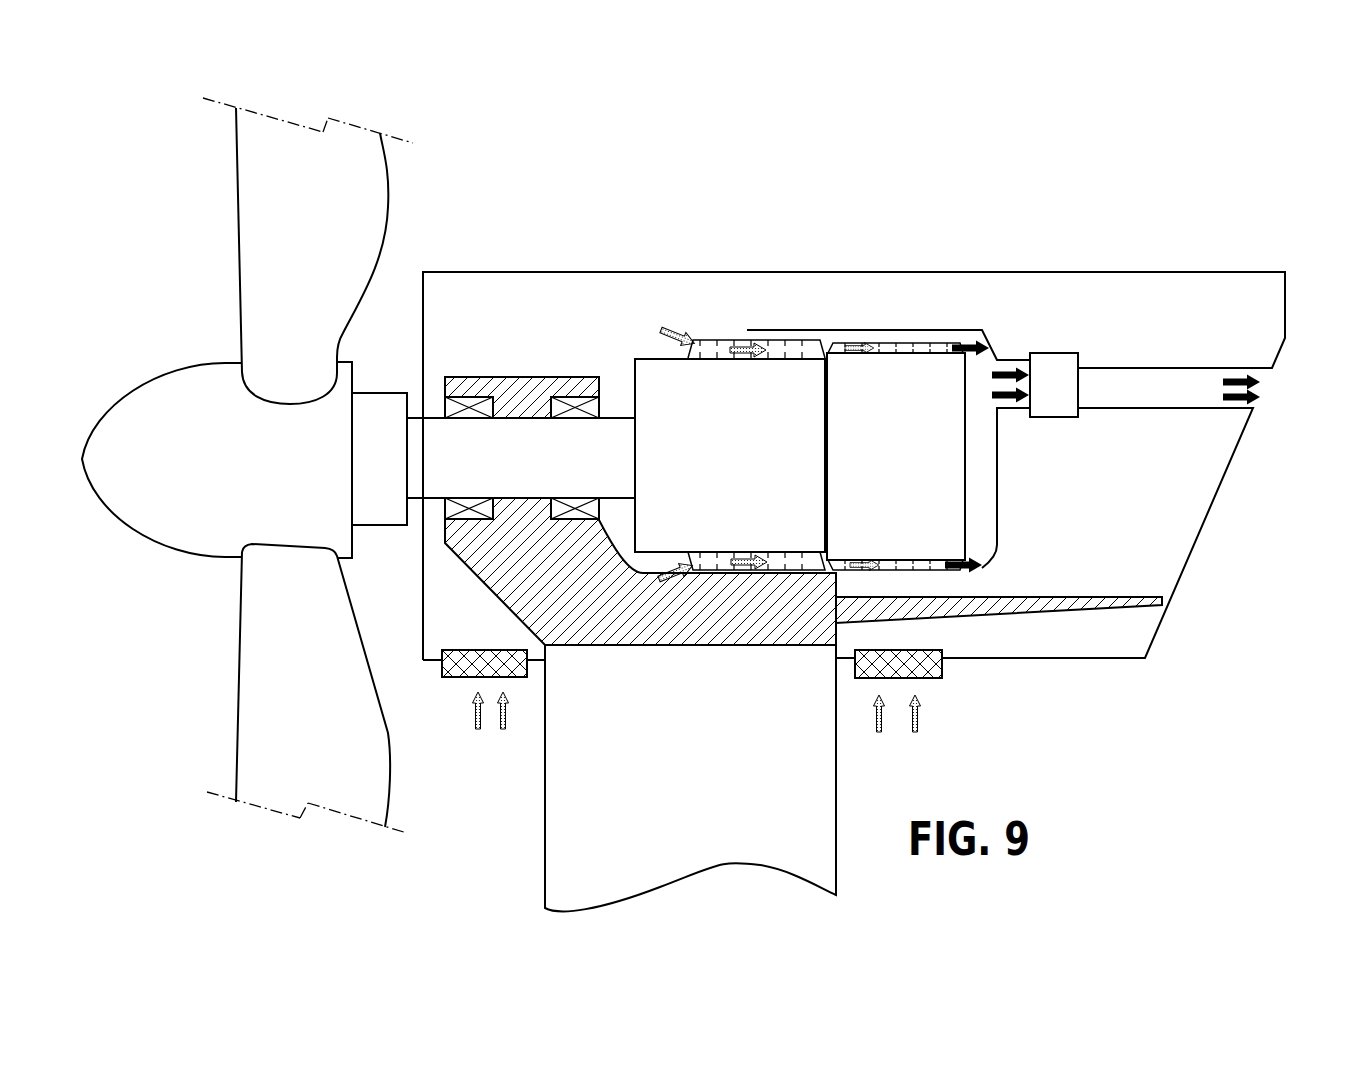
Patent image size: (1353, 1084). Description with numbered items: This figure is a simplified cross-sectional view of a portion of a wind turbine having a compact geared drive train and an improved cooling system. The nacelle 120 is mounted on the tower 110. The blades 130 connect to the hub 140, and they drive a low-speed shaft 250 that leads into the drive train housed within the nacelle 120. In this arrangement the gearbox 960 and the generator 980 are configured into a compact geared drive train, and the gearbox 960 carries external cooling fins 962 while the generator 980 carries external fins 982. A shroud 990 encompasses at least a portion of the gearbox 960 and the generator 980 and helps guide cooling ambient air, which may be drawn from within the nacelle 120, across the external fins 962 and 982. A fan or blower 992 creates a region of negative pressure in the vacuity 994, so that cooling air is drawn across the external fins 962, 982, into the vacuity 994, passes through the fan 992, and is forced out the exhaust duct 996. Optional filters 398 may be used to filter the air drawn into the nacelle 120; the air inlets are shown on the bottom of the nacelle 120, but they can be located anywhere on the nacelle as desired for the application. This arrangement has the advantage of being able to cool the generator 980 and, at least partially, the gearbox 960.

The tower 110 is at (713, 774).
The nacelle 120 is at (528, 270).
The blades 130 is at (318, 224).
The hub 140 is at (280, 469).
The low-speed shaft 250 is at (535, 470).
The filters 398 is at (452, 680).
The gearbox 960 is at (753, 470).
The external cooling fins 962 is at (717, 340).
The generator 980 is at (920, 470).
The external fins 982 is at (885, 342).
The shroud 990 is at (927, 333).
The fan or blower 992 is at (1062, 353).
The vacuity 994 is at (985, 482).
The exhaust duct 996 is at (1213, 368).